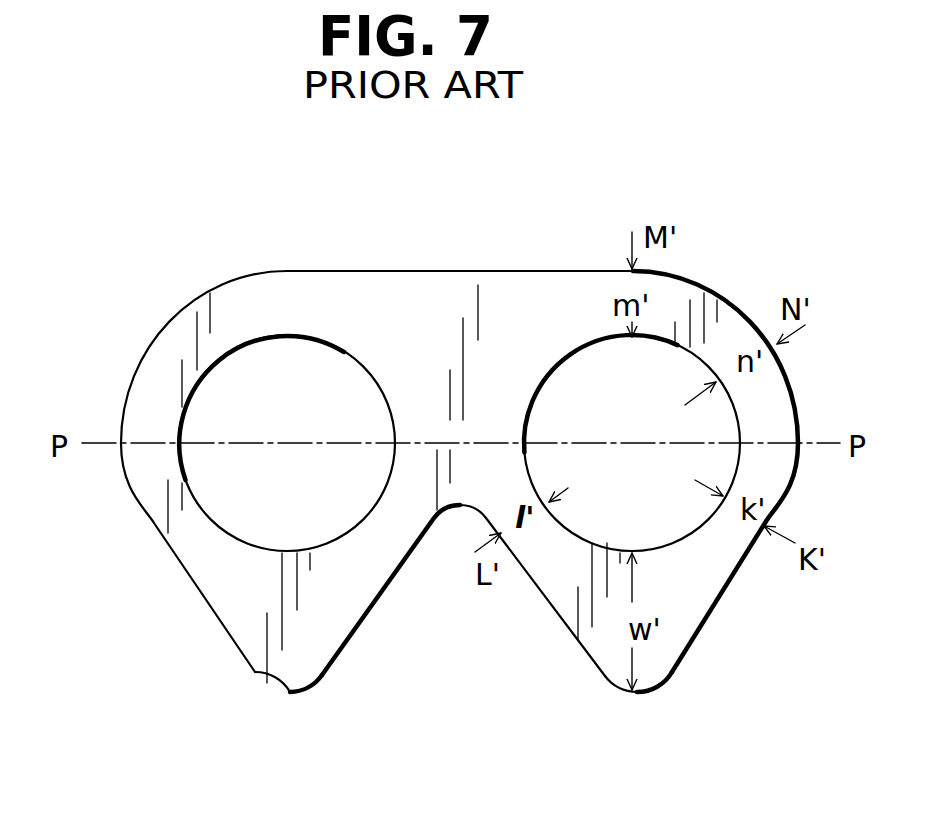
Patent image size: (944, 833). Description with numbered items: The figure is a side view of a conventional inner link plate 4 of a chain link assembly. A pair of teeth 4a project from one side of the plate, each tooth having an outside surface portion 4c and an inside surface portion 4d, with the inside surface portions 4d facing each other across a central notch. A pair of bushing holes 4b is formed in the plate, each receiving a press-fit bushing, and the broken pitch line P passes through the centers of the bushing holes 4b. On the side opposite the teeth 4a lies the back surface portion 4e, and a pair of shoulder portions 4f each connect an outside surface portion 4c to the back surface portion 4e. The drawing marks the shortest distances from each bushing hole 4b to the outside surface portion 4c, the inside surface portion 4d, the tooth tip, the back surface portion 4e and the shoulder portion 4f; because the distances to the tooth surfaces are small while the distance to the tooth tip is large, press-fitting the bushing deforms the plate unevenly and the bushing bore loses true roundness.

The inner link plate 4 is at (462, 305).
The teeth 4a is at (297, 682).
The bushing holes 4b is at (200, 418).
The outside surface portion 4c is at (205, 600).
The inside surface portion 4d is at (380, 607).
The back surface portion 4e is at (443, 270).
The shoulder portions 4f is at (160, 333).